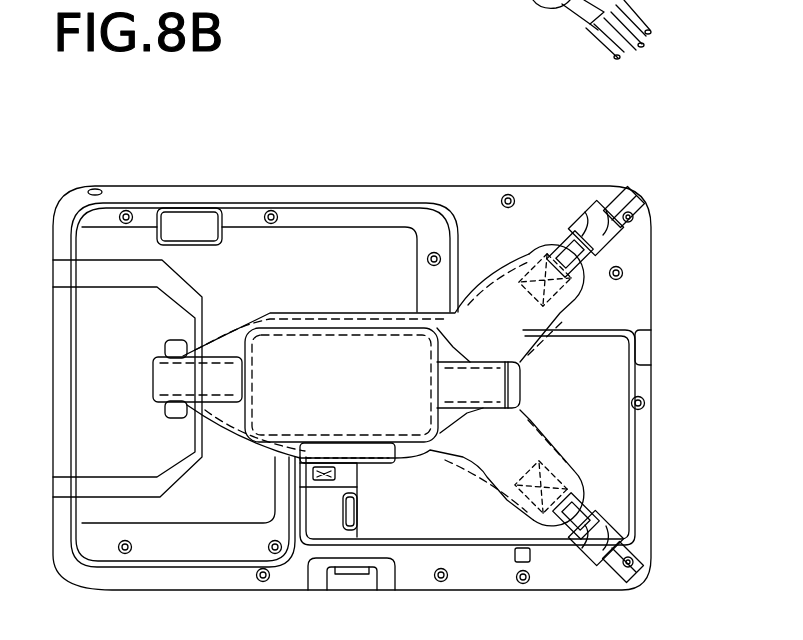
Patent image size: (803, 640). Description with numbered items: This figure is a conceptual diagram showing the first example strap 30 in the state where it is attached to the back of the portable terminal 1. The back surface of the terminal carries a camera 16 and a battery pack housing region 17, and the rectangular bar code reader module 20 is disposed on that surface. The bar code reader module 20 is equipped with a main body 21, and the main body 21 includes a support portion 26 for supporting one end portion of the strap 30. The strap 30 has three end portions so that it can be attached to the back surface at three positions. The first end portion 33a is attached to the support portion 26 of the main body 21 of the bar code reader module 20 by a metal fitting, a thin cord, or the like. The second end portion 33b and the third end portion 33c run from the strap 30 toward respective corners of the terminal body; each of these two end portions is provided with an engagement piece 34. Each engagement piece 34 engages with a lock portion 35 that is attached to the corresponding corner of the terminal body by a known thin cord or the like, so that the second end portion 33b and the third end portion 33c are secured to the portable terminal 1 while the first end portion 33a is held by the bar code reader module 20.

The portable terminal 1 is at (228, 186).
The camera 16 is at (163, 220).
The battery pack housing region 17 is at (583, 447).
The bar code reader module 20 is at (325, 263).
The main body 21 is at (85, 297).
The support portion 26 is at (185, 340).
The strap 30 is at (465, 307).
The first end portion 33a is at (163, 372).
The second end portion 33b is at (572, 500).
The third end portion 33c is at (557, 247).
The engagement piece 34 is at (600, 262).
The lock portion 35 is at (597, 233).